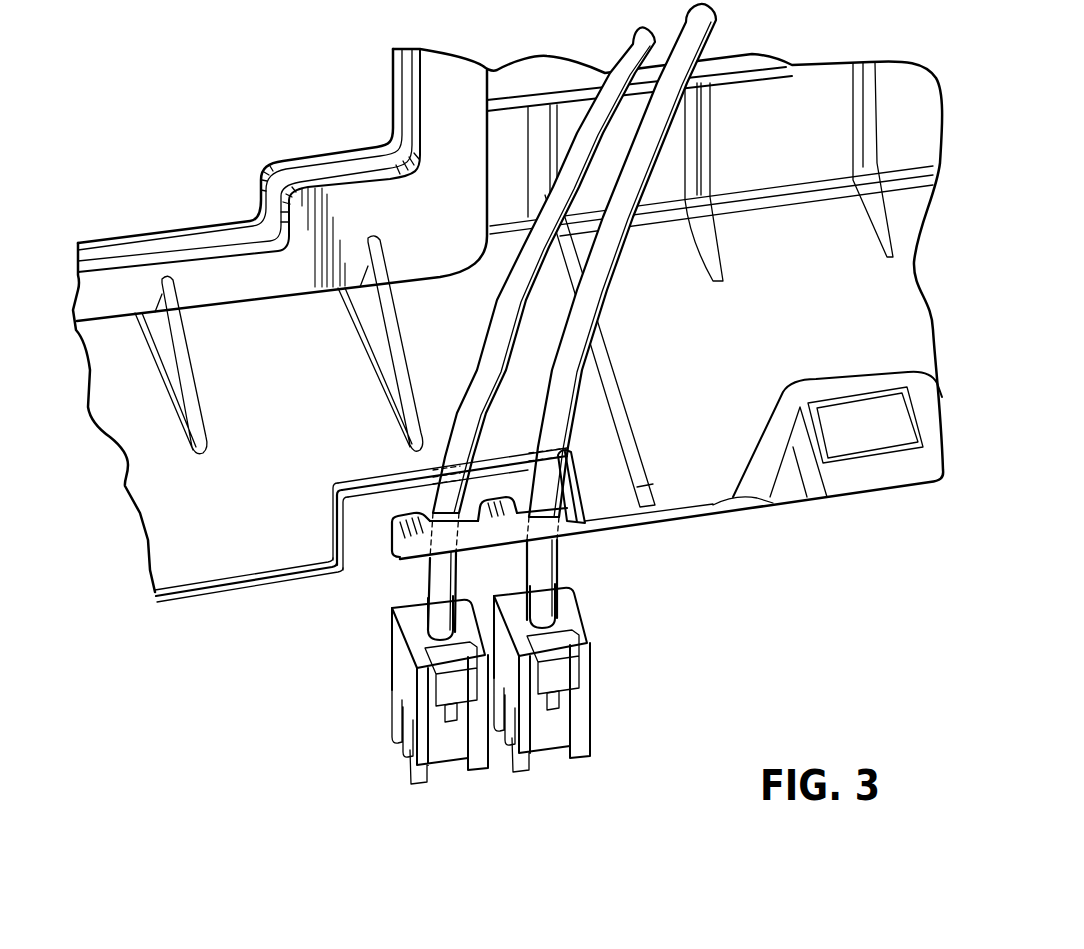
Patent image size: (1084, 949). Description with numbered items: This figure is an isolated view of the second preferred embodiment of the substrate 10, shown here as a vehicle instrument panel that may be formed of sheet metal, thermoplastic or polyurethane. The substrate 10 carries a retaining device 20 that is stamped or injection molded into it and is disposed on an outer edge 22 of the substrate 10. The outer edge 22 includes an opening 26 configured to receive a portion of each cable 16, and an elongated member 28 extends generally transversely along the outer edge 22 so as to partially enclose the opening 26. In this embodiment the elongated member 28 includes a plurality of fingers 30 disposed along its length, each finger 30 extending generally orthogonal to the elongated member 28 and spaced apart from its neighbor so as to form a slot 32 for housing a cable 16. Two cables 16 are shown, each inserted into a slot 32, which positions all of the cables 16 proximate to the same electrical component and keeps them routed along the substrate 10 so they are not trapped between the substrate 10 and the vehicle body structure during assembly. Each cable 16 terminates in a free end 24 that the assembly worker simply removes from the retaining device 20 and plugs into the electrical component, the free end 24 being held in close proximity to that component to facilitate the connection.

The substrate 10 is at (745, 512).
The cable 16 is at (483, 362).
The retaining device 20 is at (296, 467).
The outer edge 22 is at (303, 577).
The free end 24 is at (420, 582).
The opening 26 is at (367, 552).
The elongated member 28 is at (470, 532).
The finger 30 is at (410, 518).
The slot 32 is at (430, 517).